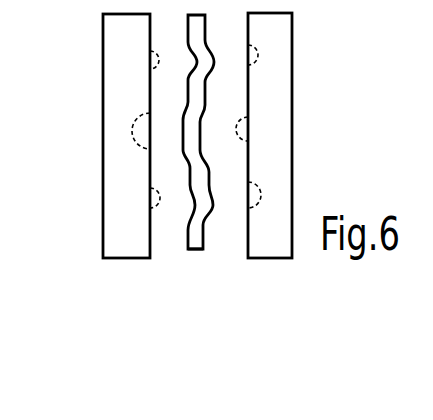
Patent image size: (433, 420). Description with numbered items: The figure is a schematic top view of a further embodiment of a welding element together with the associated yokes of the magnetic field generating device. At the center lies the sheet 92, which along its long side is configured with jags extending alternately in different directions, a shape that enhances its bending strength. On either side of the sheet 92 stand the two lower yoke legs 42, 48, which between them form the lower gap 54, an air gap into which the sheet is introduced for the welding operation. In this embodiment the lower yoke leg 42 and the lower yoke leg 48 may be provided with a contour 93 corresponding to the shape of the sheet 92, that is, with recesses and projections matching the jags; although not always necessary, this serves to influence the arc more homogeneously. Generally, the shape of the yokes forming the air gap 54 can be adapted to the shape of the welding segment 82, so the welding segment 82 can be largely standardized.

The lower yoke leg 48 is at (120, 133).
The lower yoke leg 42 is at (270, 140).
The contour 93 is at (255, 53).
The lower gap 54 is at (223, 237).
The welding segment 82 is at (190, 235).
The sheet 92 is at (197, 243).